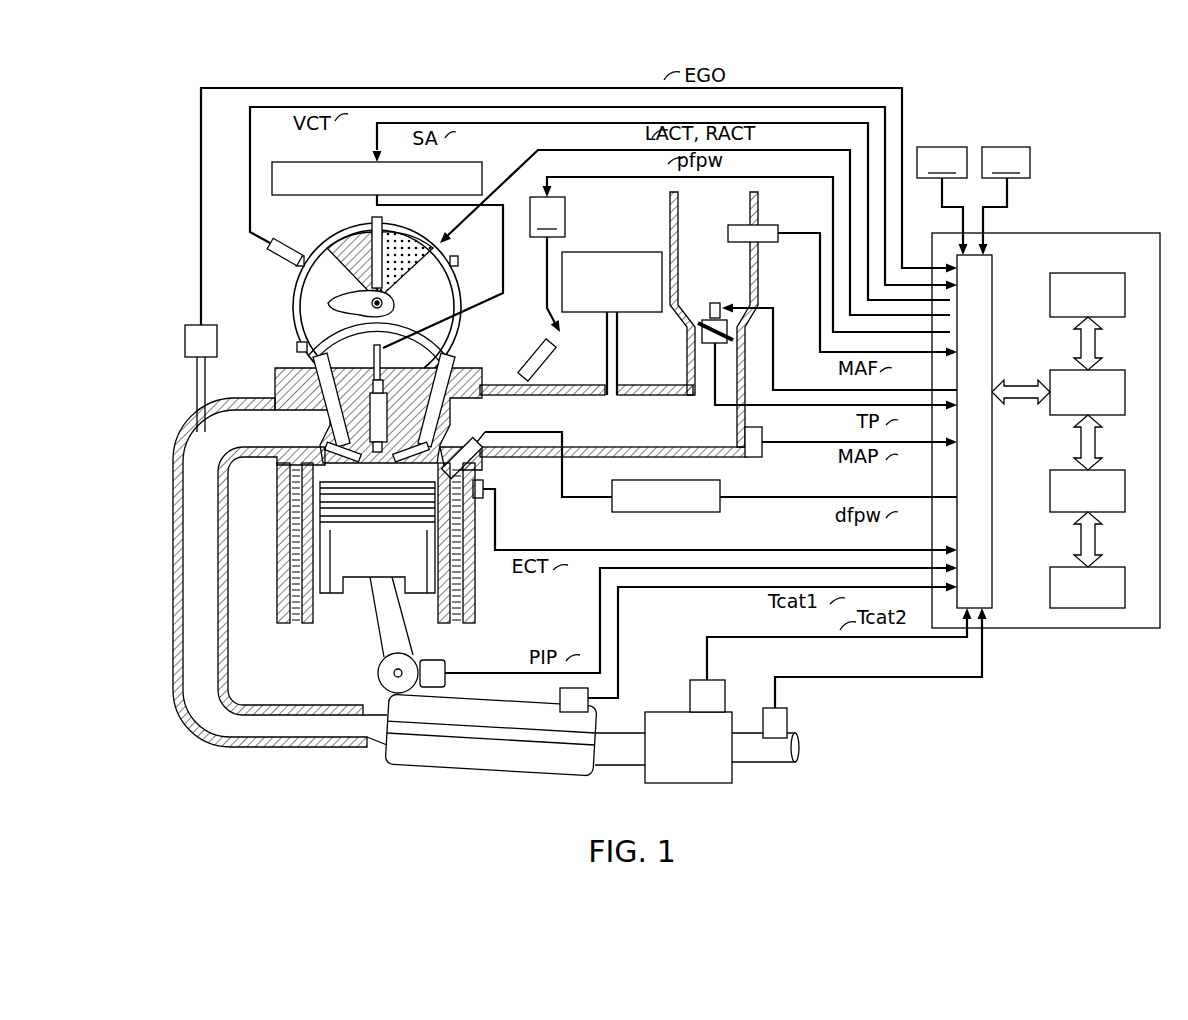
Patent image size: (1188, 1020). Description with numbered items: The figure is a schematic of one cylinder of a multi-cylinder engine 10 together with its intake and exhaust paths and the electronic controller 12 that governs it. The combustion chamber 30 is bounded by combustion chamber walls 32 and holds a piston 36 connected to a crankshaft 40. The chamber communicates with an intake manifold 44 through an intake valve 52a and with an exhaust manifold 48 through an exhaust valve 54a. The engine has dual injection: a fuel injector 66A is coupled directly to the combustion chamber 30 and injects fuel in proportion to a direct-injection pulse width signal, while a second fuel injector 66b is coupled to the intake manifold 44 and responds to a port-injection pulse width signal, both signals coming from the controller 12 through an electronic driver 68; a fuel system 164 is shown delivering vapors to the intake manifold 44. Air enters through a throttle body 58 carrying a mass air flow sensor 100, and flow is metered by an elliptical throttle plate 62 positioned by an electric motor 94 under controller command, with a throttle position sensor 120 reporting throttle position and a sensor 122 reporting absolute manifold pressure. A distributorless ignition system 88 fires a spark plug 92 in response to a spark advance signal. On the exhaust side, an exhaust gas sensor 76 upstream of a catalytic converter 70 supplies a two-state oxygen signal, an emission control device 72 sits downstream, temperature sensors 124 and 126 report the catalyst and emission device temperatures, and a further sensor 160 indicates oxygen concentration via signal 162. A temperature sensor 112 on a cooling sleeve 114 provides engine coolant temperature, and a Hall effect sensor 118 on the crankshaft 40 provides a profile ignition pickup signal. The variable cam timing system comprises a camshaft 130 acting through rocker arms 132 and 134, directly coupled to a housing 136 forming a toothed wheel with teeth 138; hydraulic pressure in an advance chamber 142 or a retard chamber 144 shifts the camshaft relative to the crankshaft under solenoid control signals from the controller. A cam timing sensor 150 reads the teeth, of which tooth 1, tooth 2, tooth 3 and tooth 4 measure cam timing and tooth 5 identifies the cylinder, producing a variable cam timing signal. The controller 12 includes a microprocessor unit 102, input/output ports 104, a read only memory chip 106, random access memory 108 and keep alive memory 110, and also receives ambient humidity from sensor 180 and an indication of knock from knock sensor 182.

The tooth 1 is at (370, 222).
The tooth 2 is at (456, 264).
The tooth 3 is at (382, 375).
The tooth 4 is at (297, 345).
The tooth 5 is at (297, 263).
The engine 10 is at (512, 305).
The controller 12 is at (1125, 233).
The combustion chamber 30 is at (335, 505).
The combustion chamber walls 32 is at (320, 635).
The piston 36 is at (375, 590).
The crankshaft 40 is at (380, 670).
The intake manifold 44 is at (638, 439).
The exhaust manifold 48 is at (185, 455).
The intake valve 52a is at (445, 432).
The exhaust valve 54a is at (320, 440).
The throttle body 58 is at (690, 372).
The throttle plate 62 is at (712, 322).
The fuel injector 66A is at (478, 462).
The fuel injector 66b is at (527, 352).
The electronic driver 68 is at (722, 495).
The catalytic converter 70 is at (455, 703).
The emission control device 72 is at (674, 712).
The exhaust gas sensor 76 is at (198, 323).
The distributorless ignition system 88 is at (476, 185).
The spark plug 92 is at (373, 395).
The electric motor 94 is at (720, 303).
The mass air flow sensor 100 is at (778, 228).
The microprocessor unit 102 is at (1112, 370).
The input/output ports 104 is at (993, 290).
The read only memory chip 106 is at (1085, 273).
The random access memory 108 is at (1112, 470).
The keep alive memory 110 is at (1108, 567).
The temperature sensor 112 is at (485, 492).
The cooling sleeve 114 is at (470, 590).
The Hall effect sensor 118 is at (442, 662).
The throttle position sensor 120 is at (694, 327).
The sensor 122 is at (764, 440).
The temperature sensor 124 is at (560, 695).
The temperature sensor 126 is at (724, 690).
The camshaft 130 is at (350, 304).
The rocker arm 132 is at (312, 362).
The rocker arm 134 is at (452, 358).
The housing 136 is at (296, 318).
The teeth 138 is at (447, 247).
The advance chamber 142 is at (395, 240).
The retard chamber 144 is at (355, 238).
The cam timing sensor 150 is at (272, 256).
The sensor 160 is at (787, 712).
The signal 162 is at (932, 680).
The fuel system 164 is at (615, 252).
The sensor 180 is at (942, 162).
The knock sensor 182 is at (1006, 162).